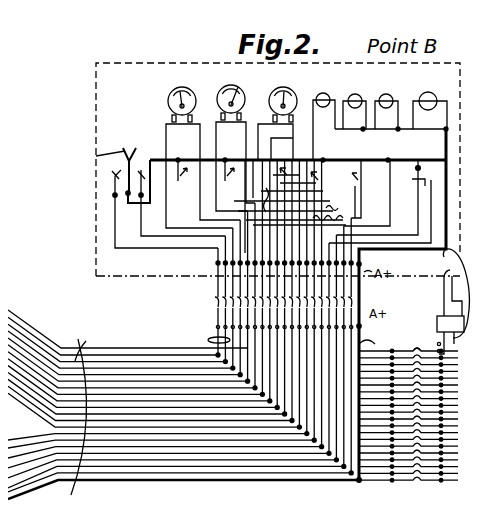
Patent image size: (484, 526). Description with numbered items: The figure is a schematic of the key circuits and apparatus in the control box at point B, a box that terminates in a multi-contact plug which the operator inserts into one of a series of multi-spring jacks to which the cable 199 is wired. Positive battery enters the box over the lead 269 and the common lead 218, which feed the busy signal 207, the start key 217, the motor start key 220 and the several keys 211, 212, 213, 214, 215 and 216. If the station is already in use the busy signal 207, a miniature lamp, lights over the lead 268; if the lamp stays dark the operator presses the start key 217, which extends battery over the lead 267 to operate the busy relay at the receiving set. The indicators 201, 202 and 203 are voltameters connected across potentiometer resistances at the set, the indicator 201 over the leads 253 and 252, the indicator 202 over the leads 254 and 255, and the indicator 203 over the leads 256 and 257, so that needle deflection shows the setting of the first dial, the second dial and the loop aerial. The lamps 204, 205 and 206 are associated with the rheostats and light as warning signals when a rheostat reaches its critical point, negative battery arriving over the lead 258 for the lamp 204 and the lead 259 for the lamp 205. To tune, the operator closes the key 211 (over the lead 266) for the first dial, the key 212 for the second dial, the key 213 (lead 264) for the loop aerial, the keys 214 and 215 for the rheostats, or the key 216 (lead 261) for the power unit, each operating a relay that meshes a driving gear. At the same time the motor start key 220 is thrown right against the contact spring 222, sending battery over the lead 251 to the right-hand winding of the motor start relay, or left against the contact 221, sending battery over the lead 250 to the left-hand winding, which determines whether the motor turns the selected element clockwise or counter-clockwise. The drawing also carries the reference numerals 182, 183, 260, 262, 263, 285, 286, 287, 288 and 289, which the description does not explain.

The indicator 201 is at (159, 97).
The indicator 202 is at (212, 80).
The indicator 203 is at (260, 81).
The lamp 204 is at (309, 90).
The lamp 205 is at (342, 90).
The lamp 206 is at (374, 90).
The busy signal 207 is at (411, 88).
The key 211 is at (177, 173).
The key 212 is at (224, 173).
The key 213 is at (281, 162).
The key 214 is at (309, 168).
The key 215 is at (349, 168).
The key 216 is at (357, 194).
The start key 217 is at (412, 161).
The lead 218 is at (397, 152).
The motor start key 220 is at (122, 144).
The contact 221 is at (113, 162).
The contact spring 222 is at (107, 168).
The cable 199 is at (54, 324).
The line conductors 182 is at (381, 333).
The line conductors 183 is at (382, 335).
The lead 250 is at (240, 322).
The lead 251 is at (240, 330).
The lead 252 is at (240, 337).
The lead 253 is at (240, 343).
The lead 254 is at (240, 350).
The lead 255 is at (157, 405).
The lead 256 is at (153, 405).
The lead 257 is at (149, 405).
The lead 258 is at (145, 405).
The lead 259 is at (141, 400).
The conductor 260 is at (159, 420).
The lead 261 is at (153, 420).
The conductor 262 is at (148, 420).
The conductor 263 is at (143, 420).
The lead 264 is at (138, 420).
The lead 266 is at (233, 435).
The lead 267 is at (230, 435).
The lead 268 is at (225, 435).
The lead 269 is at (220, 435).
The relay 285 is at (420, 333).
The relay lead 286 is at (440, 273).
The relay lead 287 is at (456, 250).
The relay lead 288 is at (432, 291).
The contact 289 is at (415, 336).